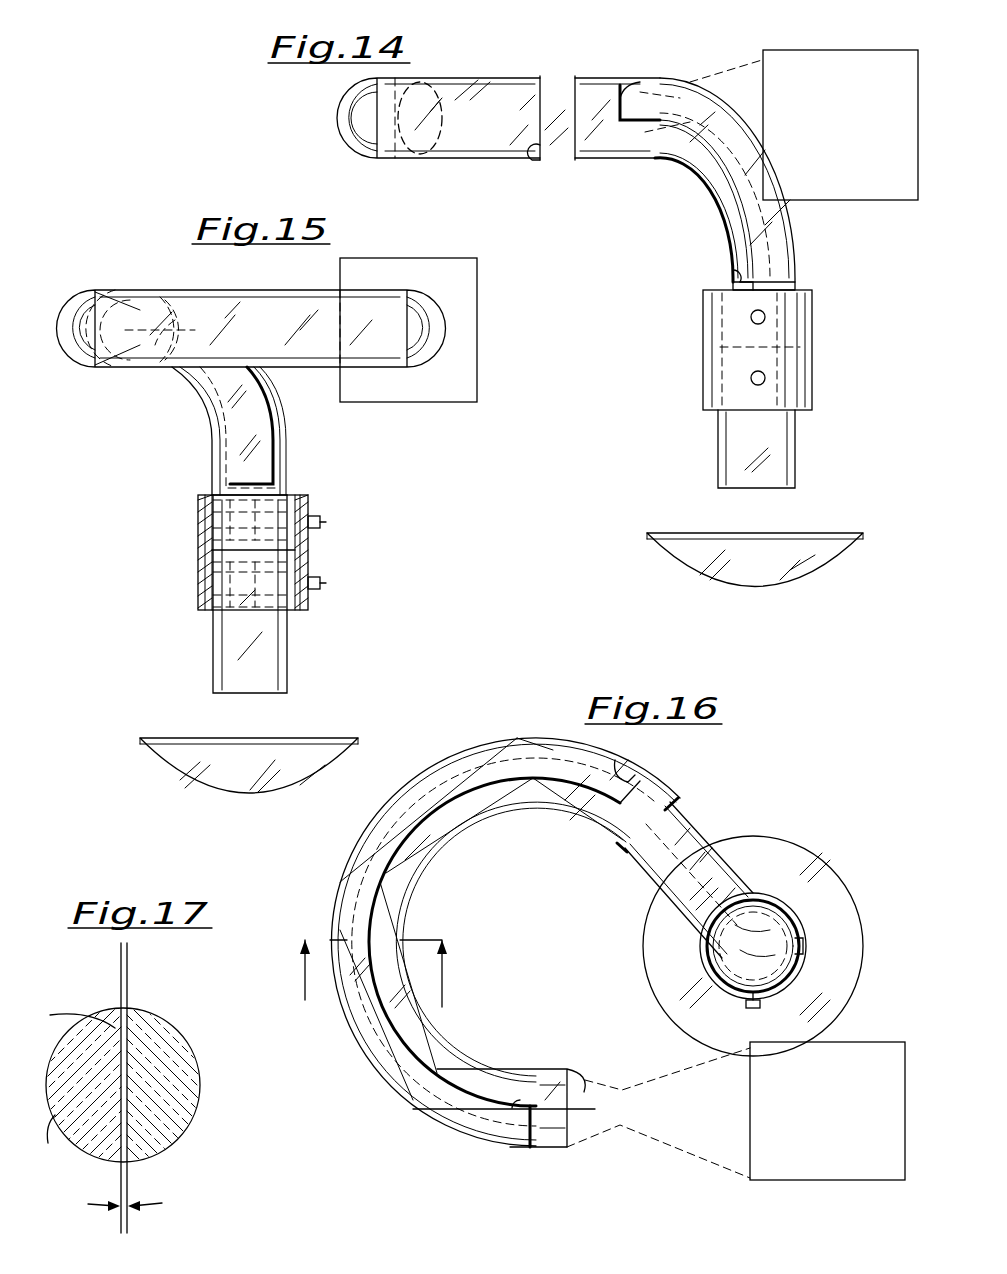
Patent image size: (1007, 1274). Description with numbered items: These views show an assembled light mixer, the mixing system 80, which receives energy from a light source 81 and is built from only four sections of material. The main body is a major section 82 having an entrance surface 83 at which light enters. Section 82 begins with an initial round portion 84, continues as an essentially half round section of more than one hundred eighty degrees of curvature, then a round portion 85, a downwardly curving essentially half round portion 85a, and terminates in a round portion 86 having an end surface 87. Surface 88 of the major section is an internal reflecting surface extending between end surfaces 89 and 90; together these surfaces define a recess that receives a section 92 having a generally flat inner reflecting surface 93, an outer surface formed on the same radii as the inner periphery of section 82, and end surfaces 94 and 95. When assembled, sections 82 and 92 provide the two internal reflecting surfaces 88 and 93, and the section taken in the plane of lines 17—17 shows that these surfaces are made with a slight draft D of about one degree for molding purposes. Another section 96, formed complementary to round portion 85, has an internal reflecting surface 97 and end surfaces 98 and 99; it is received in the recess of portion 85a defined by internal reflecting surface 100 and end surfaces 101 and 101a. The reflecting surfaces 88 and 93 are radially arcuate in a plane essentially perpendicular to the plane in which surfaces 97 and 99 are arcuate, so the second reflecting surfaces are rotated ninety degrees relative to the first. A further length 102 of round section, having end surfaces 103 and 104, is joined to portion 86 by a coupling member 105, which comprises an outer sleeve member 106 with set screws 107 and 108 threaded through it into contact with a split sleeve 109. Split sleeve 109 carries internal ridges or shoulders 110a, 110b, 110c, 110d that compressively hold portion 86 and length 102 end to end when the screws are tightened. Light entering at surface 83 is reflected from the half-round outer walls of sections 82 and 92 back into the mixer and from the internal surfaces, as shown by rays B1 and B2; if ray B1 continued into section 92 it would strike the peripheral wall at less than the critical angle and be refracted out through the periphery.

In FIG. 14, the mixing system 80 is at (632, 200).
In FIG. 15, the mixing system 80 is at (148, 418).
In FIG. 16, the mixing system 80 is at (672, 784).
In FIG. 14, the light source 81 is at (868, 196).
In FIG. 15, the light source 81 is at (445, 412).
In FIG. 16, the light source 81 is at (866, 1055).
In FIG. 14, the major section 82 is at (555, 195).
In FIG. 15, the major section 82 is at (260, 410).
In FIG. 16, the major section 82 is at (522, 1056).
In FIG. 17, the major section 82 is at (208, 1087).
In FIG. 14, the entrance surface 83 is at (585, 90).
In FIG. 16, the entrance surface 83 is at (582, 1083).
In FIG. 14, the initial round portion 84 is at (555, 95).
In FIG. 16, the initial round portion 84 is at (555, 1128).
In FIG. 14, the round portion 85 is at (610, 160).
In FIG. 16, the round portion 85 is at (615, 846).
In FIG. 14, the downwardly curving half round portion 85a is at (700, 185).
In FIG. 15, the downwardly curving half round portion 85a is at (218, 418).
In FIG. 16, the downwardly curving half round portion 85a is at (738, 888).
In FIG. 14, the terminal round portion 86 is at (800, 288).
In FIG. 15, the terminal round portion 86 is at (230, 490).
In FIG. 16, the terminal round portion 86 is at (806, 930).
In FIG. 15, the end surface 87 is at (276, 549).
In FIG. 14, the internal reflecting surface 88 is at (425, 82).
In FIG. 15, the internal reflecting surface 88 is at (112, 292).
In FIG. 16, the internal reflecting surface 88 is at (392, 868).
In FIG. 17, the internal reflecting surface 88 is at (130, 1025).
In FIG. 14, the end surface 89 is at (536, 160).
In FIG. 16, the end surface 89 is at (532, 1100).
In FIG. 16, the end surface 90 is at (645, 788).
In FIG. 15, the section 92 is at (305, 367).
In FIG. 16, the section 92 is at (508, 756).
In FIG. 17, the section 92 is at (42, 1138).
In FIG. 15, the inner reflecting surface 93 is at (85, 360).
In FIG. 16, the inner reflecting surface 93 is at (541, 776).
In FIG. 17, the inner reflecting surface 93 is at (82, 1005).
In FIG. 16, the end surface 94 is at (528, 1145).
In FIG. 16, the end surface 95 is at (616, 760).
In FIG. 14, the section 96 is at (770, 240).
In FIG. 15, the section 96 is at (283, 428).
In FIG. 16, the section 96 is at (680, 912).
In FIG. 14, the internal reflecting surface 97 is at (718, 215).
In FIG. 15, the internal reflecting surface 97 is at (288, 452).
In FIG. 14, the end surface 98 is at (732, 270).
In FIG. 14, the end surface 99 is at (628, 92).
In FIG. 16, the end surface 99 is at (676, 815).
In FIG. 14, the internal reflecting surface 100 is at (708, 130).
In FIG. 15, the internal reflecting surface 100 is at (200, 377).
In FIG. 14, the end surface 101 is at (618, 107).
In FIG. 16, the end surface 101 is at (622, 852).
In FIG. 14, the end surface 101a is at (730, 286).
In FIG. 14, the length of round section 102 is at (782, 453).
In FIG. 15, the length of round section 102 is at (272, 662).
In FIG. 14, the end surface 103 is at (742, 490).
In FIG. 15, the end surface 103 is at (258, 693).
In FIG. 14, the end surface 104 is at (812, 347).
In FIG. 15, the end surface 104 is at (222, 548).
In FIG. 14, the coupling member 105 is at (700, 378).
In FIG. 15, the coupling member 105 is at (192, 612).
In FIG. 16, the coupling member 105 is at (714, 980).
In FIG. 14, the outer sleeve member 106 is at (735, 398).
In FIG. 15, the outer sleeve member 106 is at (304, 498).
In FIG. 16, the outer sleeve member 106 is at (775, 905).
In FIG. 14, the set screw 107 is at (750, 317).
In FIG. 15, the set screw 107 is at (326, 520).
In FIG. 16, the set screw 107 is at (758, 1008).
In FIG. 14, the set screw 108 is at (766, 378).
In FIG. 15, the set screw 108 is at (326, 583).
In FIG. 15, the split sleeve 109 is at (214, 542).
In FIG. 16, the split sleeve 109 is at (793, 962).
In FIG. 15, the internal ridge 110a is at (212, 503).
In FIG. 15, the internal ridge 110b is at (215, 528).
In FIG. 15, the internal ridge 110c is at (312, 560).
In FIG. 15, the internal ridge 110d is at (296, 598).
In FIG. 16, the ray B1 is at (470, 1070).
In FIG. 16, the ray B2 is at (395, 1050).
In FIG. 16, the section lines 17 is at (371, 973).
In FIG. 17, the draft D is at (113, 1201).